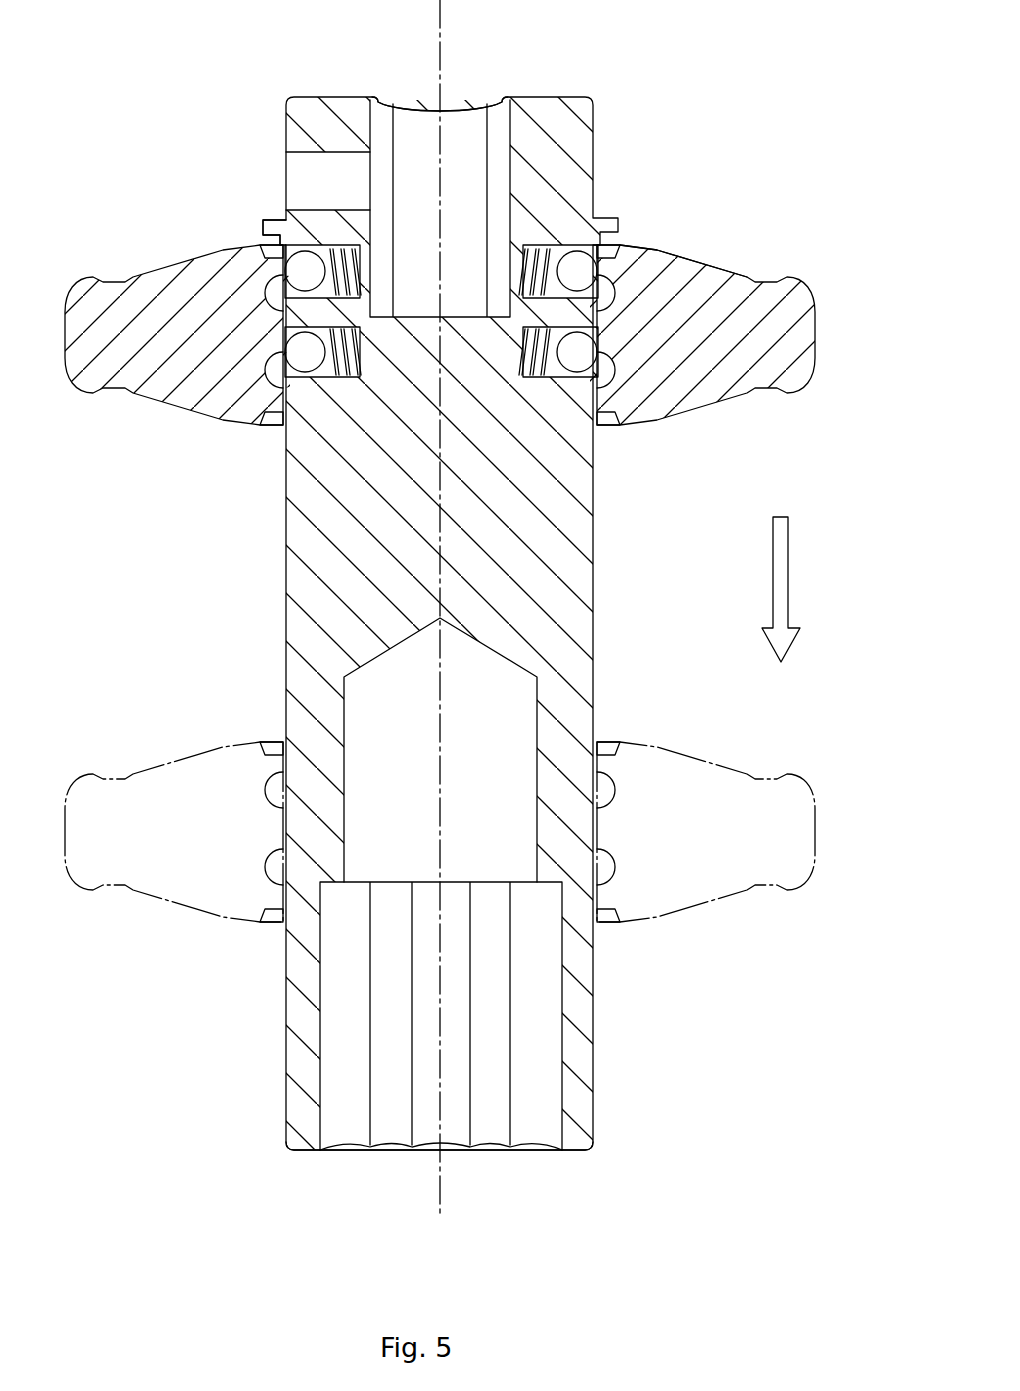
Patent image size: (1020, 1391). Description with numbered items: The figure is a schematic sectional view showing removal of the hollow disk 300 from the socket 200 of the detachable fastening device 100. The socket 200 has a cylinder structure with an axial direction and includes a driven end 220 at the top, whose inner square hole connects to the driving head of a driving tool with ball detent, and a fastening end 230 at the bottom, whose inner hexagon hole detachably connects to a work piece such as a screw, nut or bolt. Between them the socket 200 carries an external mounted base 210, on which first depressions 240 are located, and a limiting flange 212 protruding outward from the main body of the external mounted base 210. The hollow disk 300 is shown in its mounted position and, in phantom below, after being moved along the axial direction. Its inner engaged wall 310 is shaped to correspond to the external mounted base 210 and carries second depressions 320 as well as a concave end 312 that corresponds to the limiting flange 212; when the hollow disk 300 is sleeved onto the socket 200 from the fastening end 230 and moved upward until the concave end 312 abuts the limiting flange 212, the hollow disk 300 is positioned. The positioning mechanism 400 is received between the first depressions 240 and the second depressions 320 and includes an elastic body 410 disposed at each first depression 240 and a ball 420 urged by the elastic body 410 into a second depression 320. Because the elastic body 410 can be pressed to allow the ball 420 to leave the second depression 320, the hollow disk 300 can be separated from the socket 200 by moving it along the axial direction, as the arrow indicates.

The detachable fastening device 100 is at (85, 168).
The socket 200 is at (593, 580).
The external mounted base 210 is at (272, 310).
The limiting flange 212 is at (262, 228).
The driven end 220 is at (565, 97).
The fastening end 230 is at (577, 1150).
The first depression 240 is at (307, 247).
The hollow disk 300 is at (790, 328).
The inner engaged wall 310 is at (607, 335).
The concave end 312 is at (605, 250).
The second depression 320 is at (690, 250).
The positioning mechanism 400 is at (507, 209).
The elastic body 410 is at (545, 248).
The ball 420 is at (577, 251).